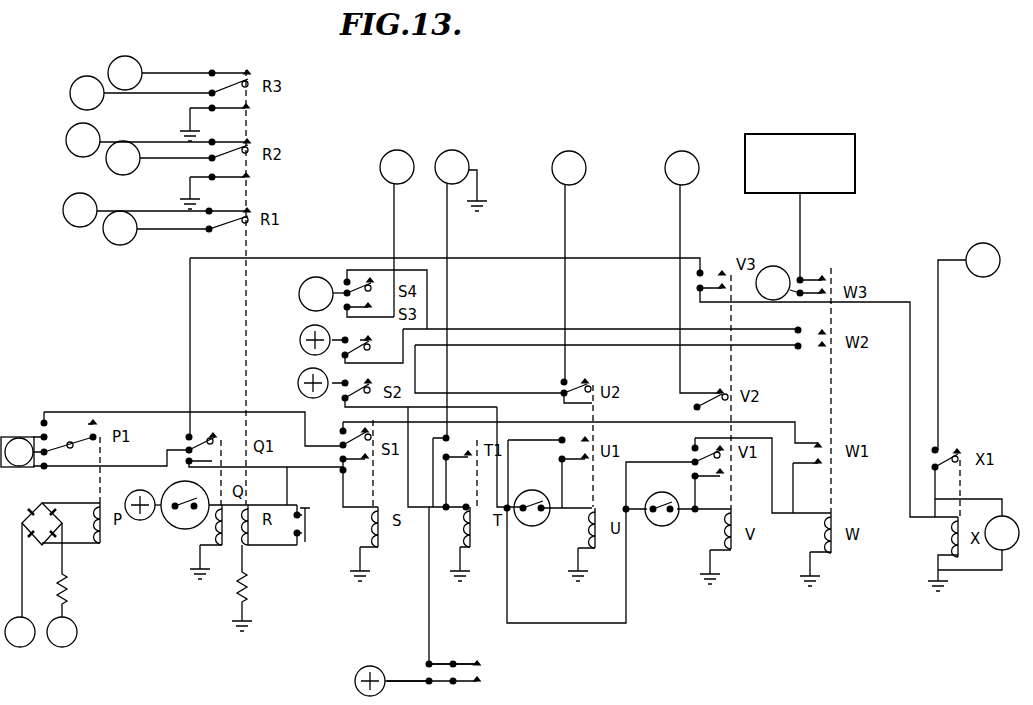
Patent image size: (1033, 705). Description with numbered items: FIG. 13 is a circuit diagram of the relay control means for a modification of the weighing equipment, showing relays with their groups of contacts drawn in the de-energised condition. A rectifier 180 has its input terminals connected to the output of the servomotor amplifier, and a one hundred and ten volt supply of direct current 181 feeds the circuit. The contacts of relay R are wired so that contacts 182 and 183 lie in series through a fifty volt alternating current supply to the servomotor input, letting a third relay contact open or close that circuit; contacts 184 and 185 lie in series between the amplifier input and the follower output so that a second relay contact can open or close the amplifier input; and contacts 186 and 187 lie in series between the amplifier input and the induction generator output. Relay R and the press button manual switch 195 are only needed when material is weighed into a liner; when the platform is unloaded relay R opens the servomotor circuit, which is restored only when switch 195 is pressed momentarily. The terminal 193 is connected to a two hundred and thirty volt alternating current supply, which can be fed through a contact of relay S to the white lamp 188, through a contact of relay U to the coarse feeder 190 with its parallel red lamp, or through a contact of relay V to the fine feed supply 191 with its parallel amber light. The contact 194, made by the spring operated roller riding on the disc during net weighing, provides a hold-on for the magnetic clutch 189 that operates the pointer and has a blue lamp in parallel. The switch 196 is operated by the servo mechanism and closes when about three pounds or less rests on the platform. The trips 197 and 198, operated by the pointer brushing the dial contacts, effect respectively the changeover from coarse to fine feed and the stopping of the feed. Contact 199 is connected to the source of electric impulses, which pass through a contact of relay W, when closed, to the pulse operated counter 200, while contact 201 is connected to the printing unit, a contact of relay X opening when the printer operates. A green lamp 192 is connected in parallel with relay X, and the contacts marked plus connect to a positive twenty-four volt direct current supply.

The rectifier 180 is at (42, 524).
The 110 volt direct current supply 181 is at (22, 452).
The contact of relay R 182 is at (175, 228).
The contact of relay R 183 is at (157, 210).
The contact of relay R 184 is at (177, 158).
The contact of relay R 185 is at (159, 140).
The contact of relay R 186 is at (159, 93).
The contact of relay R 187 is at (180, 73).
The white lamp 188 is at (397, 167).
The magnetic clutch 189 is at (461, 180).
The coarse feeder 190 is at (569, 168).
The fine feed supply 191 is at (682, 168).
The green lamp 192 is at (1002, 533).
The terminal 193 is at (323, 294).
The contact 194 is at (438, 677).
The press button manual switch 195 is at (320, 521).
The switch 196 is at (185, 505).
The trip 197 is at (527, 508).
The trip 198 is at (662, 509).
The contact 199 is at (778, 283).
The pulse operated counter 200 is at (818, 131).
The contact 201 is at (969, 346).